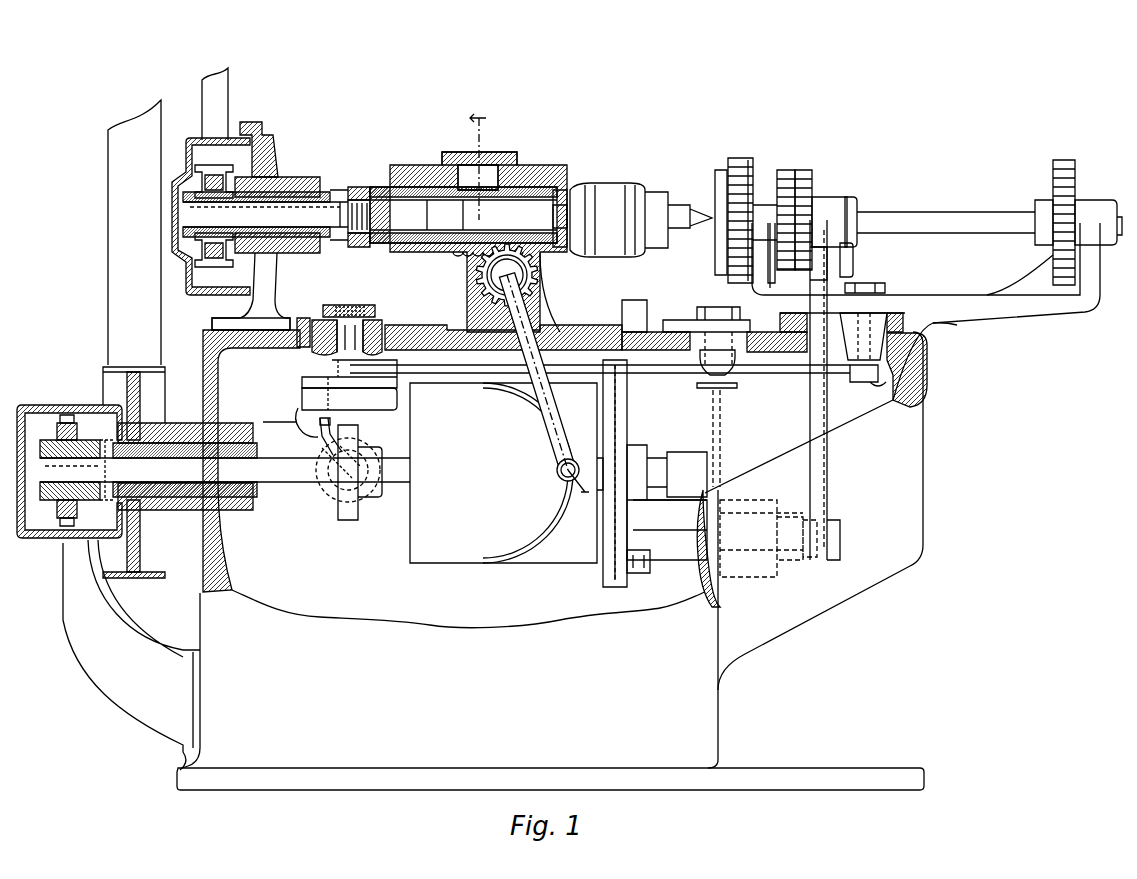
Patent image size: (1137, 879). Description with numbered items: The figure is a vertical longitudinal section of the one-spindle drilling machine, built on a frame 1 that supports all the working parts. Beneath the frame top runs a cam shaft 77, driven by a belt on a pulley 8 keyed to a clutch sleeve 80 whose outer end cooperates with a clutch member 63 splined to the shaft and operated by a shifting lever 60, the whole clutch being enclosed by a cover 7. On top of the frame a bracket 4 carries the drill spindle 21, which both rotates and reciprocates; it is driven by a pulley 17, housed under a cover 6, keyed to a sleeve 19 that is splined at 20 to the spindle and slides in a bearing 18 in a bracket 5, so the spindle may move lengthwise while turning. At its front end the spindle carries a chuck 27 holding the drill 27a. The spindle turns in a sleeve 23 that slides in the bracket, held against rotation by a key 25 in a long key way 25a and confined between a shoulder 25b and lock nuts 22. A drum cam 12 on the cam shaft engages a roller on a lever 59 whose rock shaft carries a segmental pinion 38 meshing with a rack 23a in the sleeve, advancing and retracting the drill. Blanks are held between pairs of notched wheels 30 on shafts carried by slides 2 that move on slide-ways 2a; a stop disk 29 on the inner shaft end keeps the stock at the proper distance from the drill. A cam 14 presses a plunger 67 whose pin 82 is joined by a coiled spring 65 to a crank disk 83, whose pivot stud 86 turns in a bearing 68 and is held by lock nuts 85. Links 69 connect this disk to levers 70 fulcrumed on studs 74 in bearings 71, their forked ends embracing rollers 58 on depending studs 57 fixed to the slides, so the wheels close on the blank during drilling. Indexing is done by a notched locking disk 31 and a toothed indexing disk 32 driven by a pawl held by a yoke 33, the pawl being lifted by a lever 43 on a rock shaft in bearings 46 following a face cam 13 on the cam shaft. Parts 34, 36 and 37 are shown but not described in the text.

The frame 1 is at (510, 429).
The slides 2 is at (955, 325).
The slide-ways 2a is at (900, 318).
The bracket 4 is at (528, 163).
The bracket 5 is at (262, 146).
The cover 6 is at (188, 148).
The cover 7 is at (52, 405).
The pulley 8 is at (103, 382).
The drum cam 12 is at (452, 555).
The face cam 13 is at (603, 574).
The cam 14 is at (357, 506).
The pulley 17 is at (210, 175).
The bearing 18 is at (275, 177).
The sleeve 19 is at (318, 192).
The spline 20 is at (333, 212).
The drill spindle 21 is at (336, 225).
The lock nuts 22 is at (364, 187).
The sleeve 23 is at (558, 186).
The rack 23a is at (478, 262).
The key 25 is at (490, 182).
The key way 25a is at (447, 162).
The shoulder 25b is at (567, 205).
The chuck 27 is at (610, 252).
The drill 27a is at (698, 224).
The stop disk 29 is at (716, 172).
The notched wheels 30 is at (742, 160).
The locking disk 31 is at (786, 170).
The indexing disk 32 is at (802, 172).
The yoke 33 is at (820, 200).
The collar 34 is at (852, 205).
The shaft 36 is at (906, 216).
The bracket tab 37 is at (853, 262).
The segmental pinion 38 is at (538, 275).
The lever 43 is at (623, 318).
The bearings 46 is at (692, 572).
The studs 57 is at (863, 336).
The rollers 58 is at (870, 382).
The lever 59 is at (552, 390).
The shifting lever 60 is at (58, 437).
The clutch member 63 is at (57, 505).
The coiled spring 65 is at (298, 413).
The plunger 67 is at (328, 484).
The bearing 68 is at (400, 324).
The links 69 is at (302, 384).
The levers 70 is at (667, 474).
The bearings 71 is at (675, 322).
The studs 74 is at (738, 378).
The cam shaft 77 is at (402, 482).
The clutch sleeve 80 is at (257, 492).
The pin 82 is at (320, 441).
The crank disk 83 is at (302, 396).
The lock nuts 85 is at (372, 320).
The pivot stud 86 is at (362, 318).